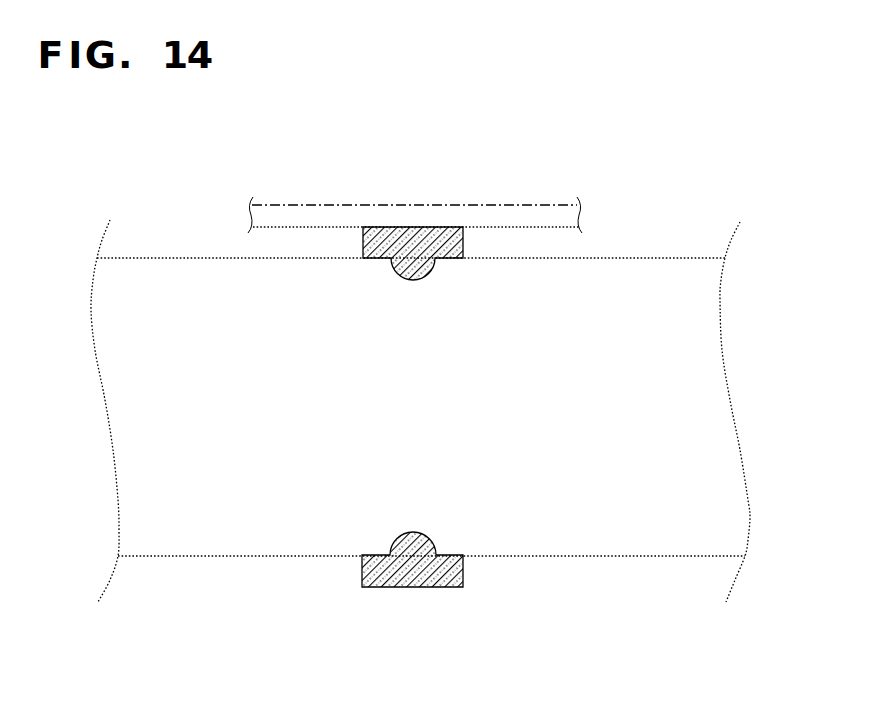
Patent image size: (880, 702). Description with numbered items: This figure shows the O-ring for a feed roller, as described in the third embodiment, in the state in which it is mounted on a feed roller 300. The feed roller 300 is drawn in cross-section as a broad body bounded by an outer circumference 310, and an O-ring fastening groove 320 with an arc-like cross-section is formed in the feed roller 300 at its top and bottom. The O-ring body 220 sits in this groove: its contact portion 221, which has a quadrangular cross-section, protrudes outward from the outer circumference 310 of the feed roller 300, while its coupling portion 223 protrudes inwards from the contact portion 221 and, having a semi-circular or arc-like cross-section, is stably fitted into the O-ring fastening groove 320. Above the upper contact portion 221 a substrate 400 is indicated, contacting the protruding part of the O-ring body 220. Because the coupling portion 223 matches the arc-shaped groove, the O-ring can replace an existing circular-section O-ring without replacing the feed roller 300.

The feed roller 300 is at (651, 242).
The outer circumference 310 is at (600, 256).
The O-ring fastening groove 320 is at (430, 278).
The O-ring body 220 is at (440, 219).
The contact portion 221 is at (464, 247).
The coupling portion 223 is at (392, 275).
The substrate 400 is at (368, 205).